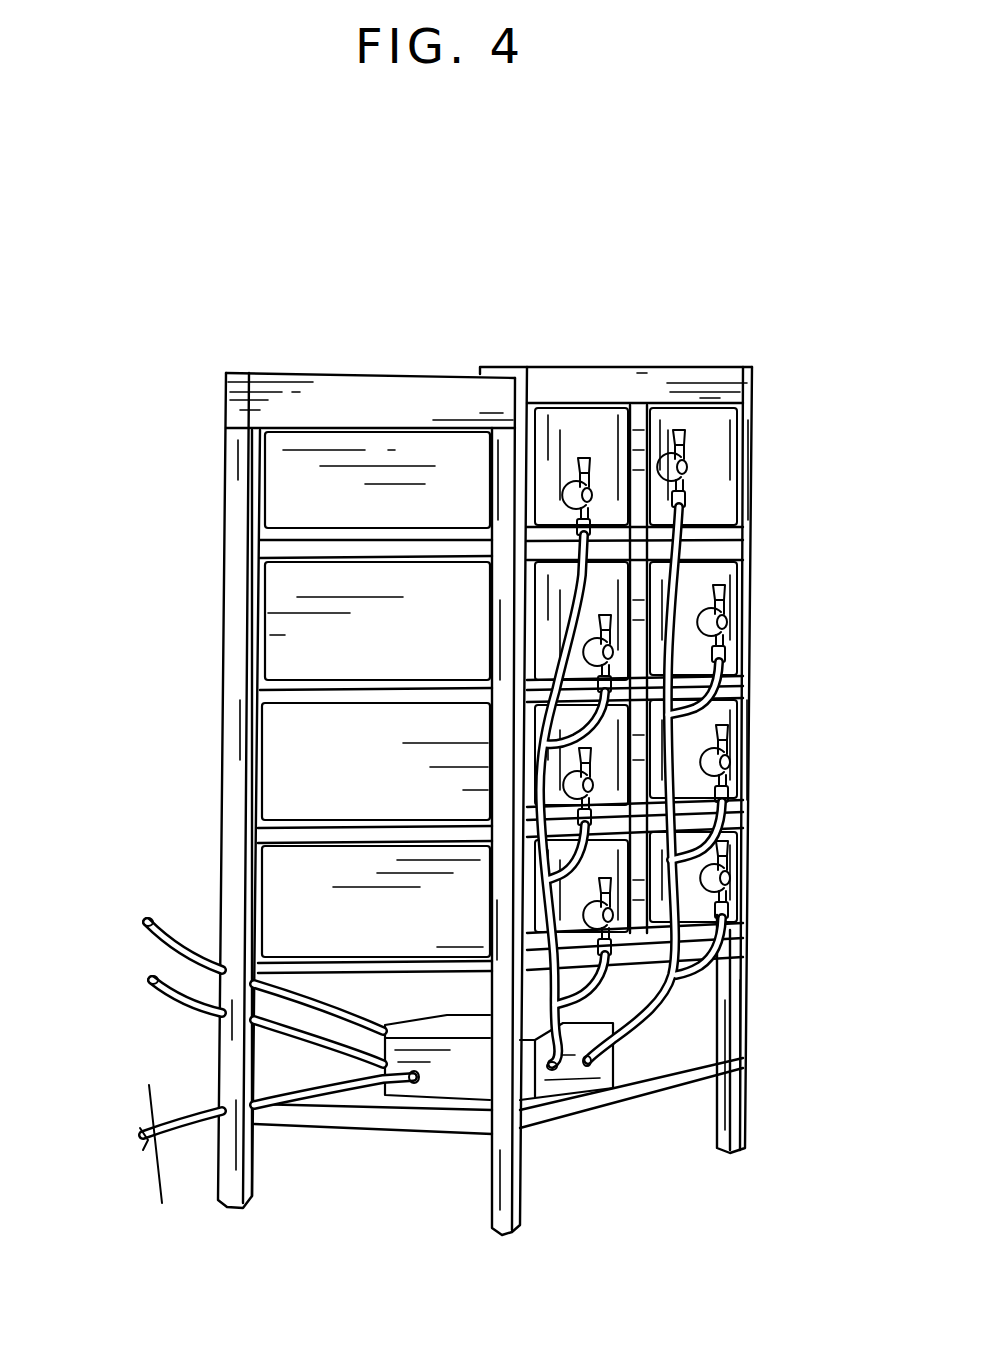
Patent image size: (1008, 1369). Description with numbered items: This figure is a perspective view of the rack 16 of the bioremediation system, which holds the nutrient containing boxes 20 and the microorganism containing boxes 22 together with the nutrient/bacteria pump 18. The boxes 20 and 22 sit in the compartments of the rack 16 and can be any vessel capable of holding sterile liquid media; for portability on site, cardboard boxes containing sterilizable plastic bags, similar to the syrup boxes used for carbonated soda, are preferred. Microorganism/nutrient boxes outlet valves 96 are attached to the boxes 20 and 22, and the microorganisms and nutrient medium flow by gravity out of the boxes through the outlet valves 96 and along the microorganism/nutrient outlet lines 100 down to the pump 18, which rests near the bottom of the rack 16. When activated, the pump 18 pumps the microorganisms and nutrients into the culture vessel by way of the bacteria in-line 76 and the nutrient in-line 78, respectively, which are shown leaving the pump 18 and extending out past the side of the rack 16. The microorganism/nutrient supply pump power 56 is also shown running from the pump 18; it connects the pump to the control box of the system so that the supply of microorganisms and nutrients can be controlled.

The rack 16 is at (258, 270).
The pump 18 is at (557, 1085).
The nutrient containing boxes 20 is at (297, 758).
The microorganism containing boxes 22 is at (720, 506).
The microorganism/nutrient supply pump power 56 is at (197, 1117).
The bacteria in-line 76 is at (186, 944).
The nutrient in-line 78 is at (195, 1006).
The microorganism/nutrient boxes outlet valves 96 is at (742, 764).
The microorganism/nutrient outlet lines 100 is at (582, 587).